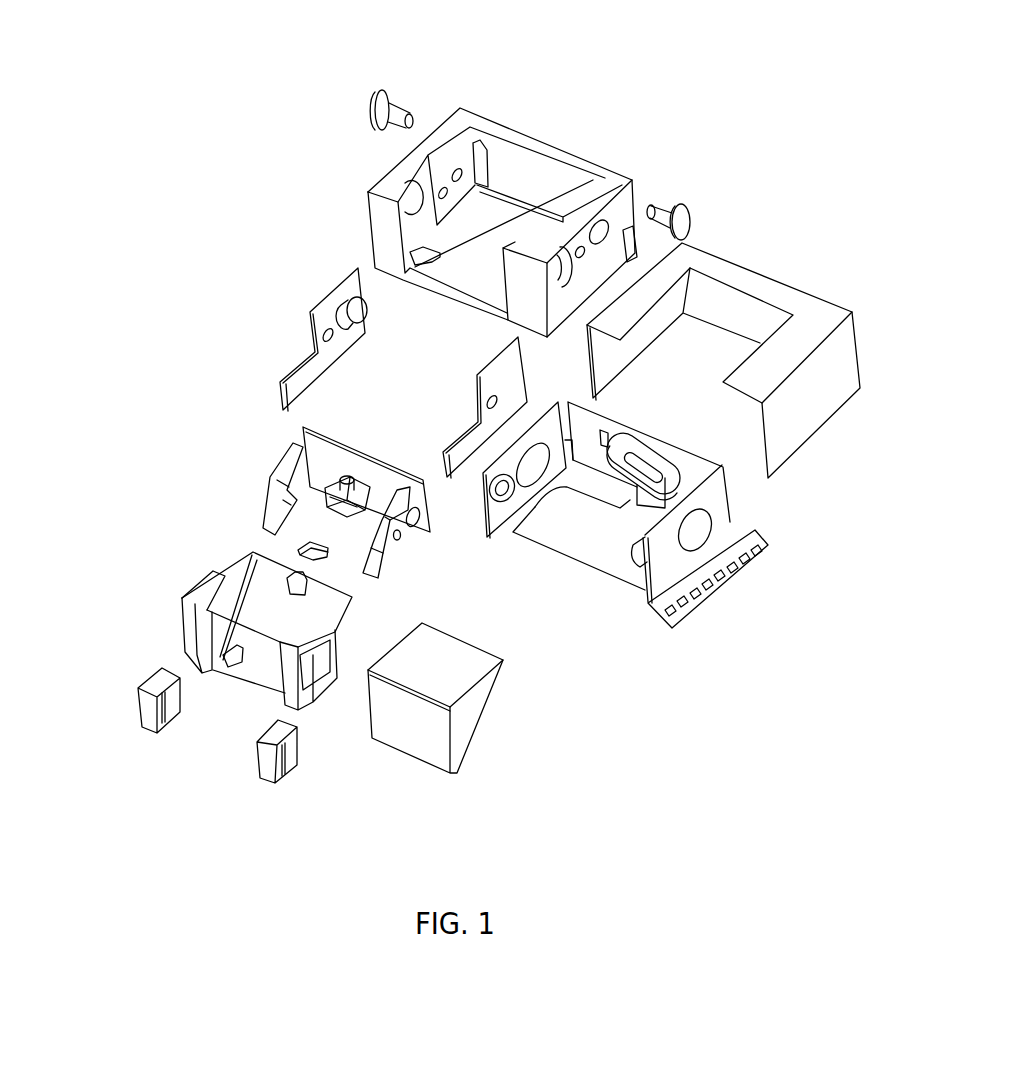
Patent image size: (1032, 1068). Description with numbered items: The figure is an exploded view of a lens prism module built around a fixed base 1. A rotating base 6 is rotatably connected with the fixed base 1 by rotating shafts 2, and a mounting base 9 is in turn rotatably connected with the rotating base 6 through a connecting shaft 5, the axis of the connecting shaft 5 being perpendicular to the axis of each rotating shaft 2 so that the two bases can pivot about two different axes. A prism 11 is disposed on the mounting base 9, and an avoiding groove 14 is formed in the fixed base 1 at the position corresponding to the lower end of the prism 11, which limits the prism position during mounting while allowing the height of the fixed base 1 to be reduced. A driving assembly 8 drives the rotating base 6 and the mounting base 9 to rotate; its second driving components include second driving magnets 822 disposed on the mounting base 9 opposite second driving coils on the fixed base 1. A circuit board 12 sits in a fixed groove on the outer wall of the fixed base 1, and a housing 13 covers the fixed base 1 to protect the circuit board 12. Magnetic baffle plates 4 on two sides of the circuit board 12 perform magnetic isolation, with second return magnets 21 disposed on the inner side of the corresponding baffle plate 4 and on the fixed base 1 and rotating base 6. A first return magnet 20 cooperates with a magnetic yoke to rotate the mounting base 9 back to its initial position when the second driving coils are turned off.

The fixed base 1 is at (456, 115).
The rotating shafts 2 is at (370, 110).
The magnetic baffle plates 4 is at (308, 355).
The connecting shaft 5 is at (297, 443).
The rotating base 6 is at (280, 470).
The driving assembly 8 is at (294, 773).
The mounting base 9 is at (180, 620).
The prism 11 is at (473, 695).
The circuit board 12 is at (717, 513).
The housing 13 is at (800, 378).
The avoiding groove 14 is at (593, 180).
The first return magnet 20 is at (303, 542).
The second return magnets 21 is at (342, 298).
The second driving magnets 822 is at (148, 677).